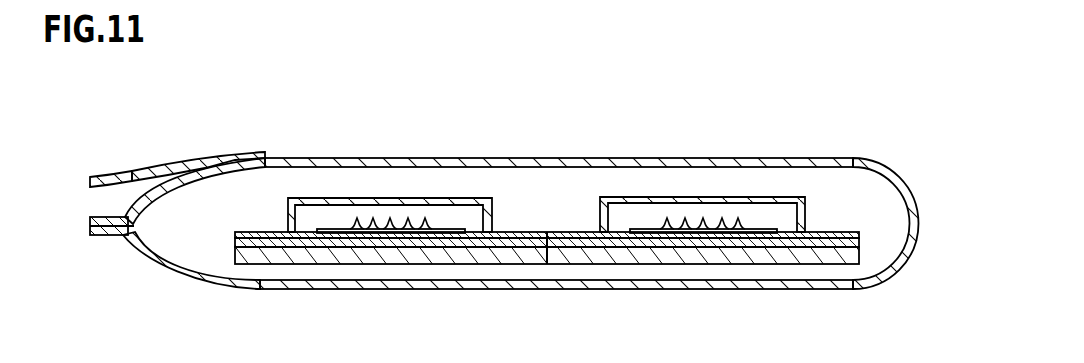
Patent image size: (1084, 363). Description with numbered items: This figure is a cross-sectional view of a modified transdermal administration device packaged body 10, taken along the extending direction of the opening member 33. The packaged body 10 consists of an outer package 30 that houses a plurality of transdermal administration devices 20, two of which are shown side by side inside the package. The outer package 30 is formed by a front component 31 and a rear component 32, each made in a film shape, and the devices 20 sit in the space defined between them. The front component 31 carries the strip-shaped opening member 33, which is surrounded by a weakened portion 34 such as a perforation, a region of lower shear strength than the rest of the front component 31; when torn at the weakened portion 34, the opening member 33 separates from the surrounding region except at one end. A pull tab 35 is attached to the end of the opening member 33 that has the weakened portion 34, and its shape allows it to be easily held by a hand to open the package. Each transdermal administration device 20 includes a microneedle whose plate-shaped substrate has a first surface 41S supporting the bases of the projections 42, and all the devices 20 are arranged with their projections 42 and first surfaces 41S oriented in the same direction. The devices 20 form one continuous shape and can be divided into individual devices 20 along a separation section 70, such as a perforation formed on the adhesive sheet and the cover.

The transdermal administration device packaged body 10 is at (155, 122).
The transdermal administration device 20 is at (275, 217).
The outer package 30 is at (918, 221).
The front component 31 is at (795, 157).
The rear component 32 is at (688, 290).
The opening member 33 is at (520, 158).
The weakened portion 34 is at (215, 160).
The pull tab 35 is at (130, 174).
The first surface 41S is at (330, 231).
The projection 42 is at (432, 218).
The separation section 70 is at (547, 232).